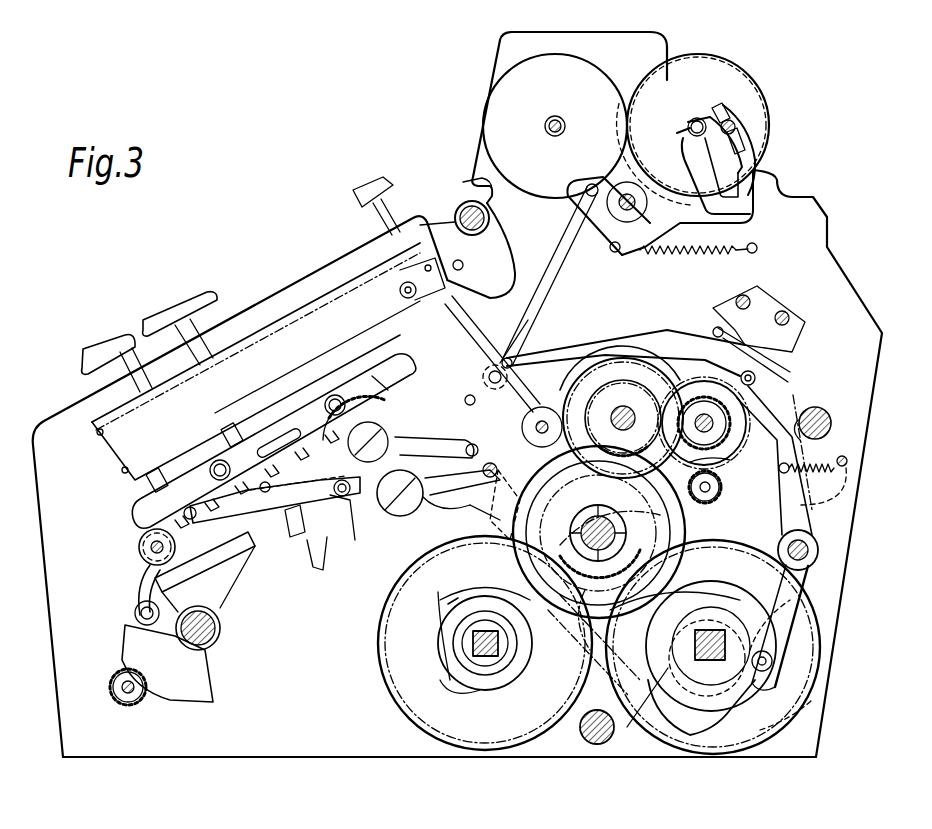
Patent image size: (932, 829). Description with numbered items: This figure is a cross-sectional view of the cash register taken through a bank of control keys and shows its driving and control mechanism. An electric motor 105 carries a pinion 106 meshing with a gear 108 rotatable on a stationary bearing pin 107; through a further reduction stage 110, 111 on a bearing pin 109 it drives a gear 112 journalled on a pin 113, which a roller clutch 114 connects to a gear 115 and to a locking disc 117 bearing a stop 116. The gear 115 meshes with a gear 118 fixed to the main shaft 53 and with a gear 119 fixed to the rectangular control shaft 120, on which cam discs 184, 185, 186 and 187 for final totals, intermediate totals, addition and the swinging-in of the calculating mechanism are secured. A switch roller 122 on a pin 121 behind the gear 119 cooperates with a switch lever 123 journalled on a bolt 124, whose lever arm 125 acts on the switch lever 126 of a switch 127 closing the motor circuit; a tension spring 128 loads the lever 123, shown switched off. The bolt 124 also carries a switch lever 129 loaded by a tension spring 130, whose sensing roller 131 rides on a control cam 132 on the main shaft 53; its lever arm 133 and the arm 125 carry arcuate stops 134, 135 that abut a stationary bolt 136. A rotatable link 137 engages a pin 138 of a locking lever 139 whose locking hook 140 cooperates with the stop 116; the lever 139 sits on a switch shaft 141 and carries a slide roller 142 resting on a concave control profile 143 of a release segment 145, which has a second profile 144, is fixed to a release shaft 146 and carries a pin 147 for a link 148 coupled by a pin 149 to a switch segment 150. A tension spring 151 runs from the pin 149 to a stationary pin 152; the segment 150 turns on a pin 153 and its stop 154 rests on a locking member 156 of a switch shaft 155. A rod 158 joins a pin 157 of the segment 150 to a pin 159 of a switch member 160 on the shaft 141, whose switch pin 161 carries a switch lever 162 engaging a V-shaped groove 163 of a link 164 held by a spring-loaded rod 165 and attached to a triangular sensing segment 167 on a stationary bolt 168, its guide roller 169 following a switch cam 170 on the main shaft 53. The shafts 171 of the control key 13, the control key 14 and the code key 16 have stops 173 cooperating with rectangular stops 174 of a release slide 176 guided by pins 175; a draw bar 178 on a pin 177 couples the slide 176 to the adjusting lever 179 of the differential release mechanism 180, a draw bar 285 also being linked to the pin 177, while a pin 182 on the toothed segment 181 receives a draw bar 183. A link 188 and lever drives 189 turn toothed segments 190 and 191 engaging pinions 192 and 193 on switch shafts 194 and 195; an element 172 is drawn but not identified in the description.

The control key 13 is at (105, 345).
The control key 14 is at (162, 312).
The code key 16 is at (368, 185).
The main shaft 53 is at (712, 660).
The electric motor 105 is at (770, 527).
The pinion 106 is at (720, 492).
The stationary bearing pin 107 is at (714, 423).
The gear 108 is at (740, 458).
The bearing pin 109 is at (680, 362).
The reduction stage 110 is at (638, 395).
The reduction stage 111 is at (623, 406).
The gear 112 is at (660, 535).
The pin 113 is at (660, 515).
The roller clutch 114 is at (612, 555).
The gear 115 is at (487, 572).
The stop 116 is at (500, 525).
The locking disc 117 is at (700, 580).
The gear 118 is at (805, 620).
The gear 119 is at (385, 700).
The control shaft 120 is at (478, 650).
The pin 121 is at (800, 720).
The switch roller 122 is at (745, 690).
The switch lever 123 is at (790, 685).
The bolt 124 is at (818, 550).
The lever arm 125 is at (742, 374).
The switch lever 126 is at (780, 380).
The switch 127 is at (795, 345).
The tension spring 128 is at (848, 488).
The switch lever 129 is at (790, 640).
The tension spring 130 is at (800, 460).
The sensing roller 131 is at (772, 663).
The control cam 132 is at (720, 610).
The lever arm 133 is at (775, 405).
The arcuate stop 134 is at (828, 414).
The arcuate stop 135 is at (818, 455).
The stationary bolt 136 is at (831, 425).
The rotatable link 137 is at (580, 352).
The pin 138 is at (520, 335).
The locking lever 139 is at (425, 310).
The locking hook 140 is at (470, 515).
The switch shaft 141 is at (542, 420).
The slide roller 142 is at (400, 291).
The concave control profile 143 is at (486, 312).
The concave control profile 144 is at (432, 222).
The release segment 145 is at (500, 262).
The release shaft 146 is at (465, 185).
The pin 147 is at (489, 218).
The link 148 is at (612, 252).
The pin 149 is at (627, 202).
The switch segment 150 is at (690, 255).
The tension spring 151 is at (738, 255).
The stationary pin 152 is at (757, 251).
The pin 153 is at (648, 252).
The stop 154 is at (746, 150).
The switch shaft 155 is at (730, 120).
The locking member 156 is at (740, 128).
The pin 157 is at (592, 190).
The rod 158 is at (556, 287).
The pin 159 is at (490, 380).
The switch member 160 is at (465, 396).
The switch pin 161 is at (470, 482).
The switch lever 162 is at (462, 504).
The V-shaped groove 163 is at (490, 477).
The link 164 is at (625, 655).
The spring-loaded rod 165 is at (400, 440).
The triangular sensing segment 167 is at (622, 720).
The stationary bolt 168 is at (580, 732).
The guide roller 169 is at (588, 640).
The switch cam 170 is at (710, 722).
The key shaft 171 is at (235, 340).
The plate 172 is at (112, 450).
The stop 173 is at (240, 430).
The rectangular stop 174 is at (300, 395).
The pin 175 is at (371, 370).
The release slide 176 is at (165, 470).
The pin 177 is at (342, 496).
The draw bar 178 is at (250, 500).
The adjusting lever 179 is at (355, 535).
The differential control mechanism 180 is at (400, 516).
The toothed segment 181 is at (330, 448).
The pin 182 is at (275, 484).
The draw bar 183 is at (296, 532).
The cam disc 184 is at (440, 600).
The cam disc 185 is at (455, 630).
The cam disc 186 is at (515, 680).
The cam disc 187 is at (450, 690).
The link 188 is at (205, 565).
The lever drive 189 is at (135, 613).
The toothed segment 190 is at (140, 580).
The toothed segment 191 is at (175, 700).
The pinion 192 is at (140, 547).
The pinion 193 is at (115, 675).
The switch shaft 194 is at (163, 547).
The switch shaft 195 is at (122, 690).
The draw bar 285 is at (318, 568).